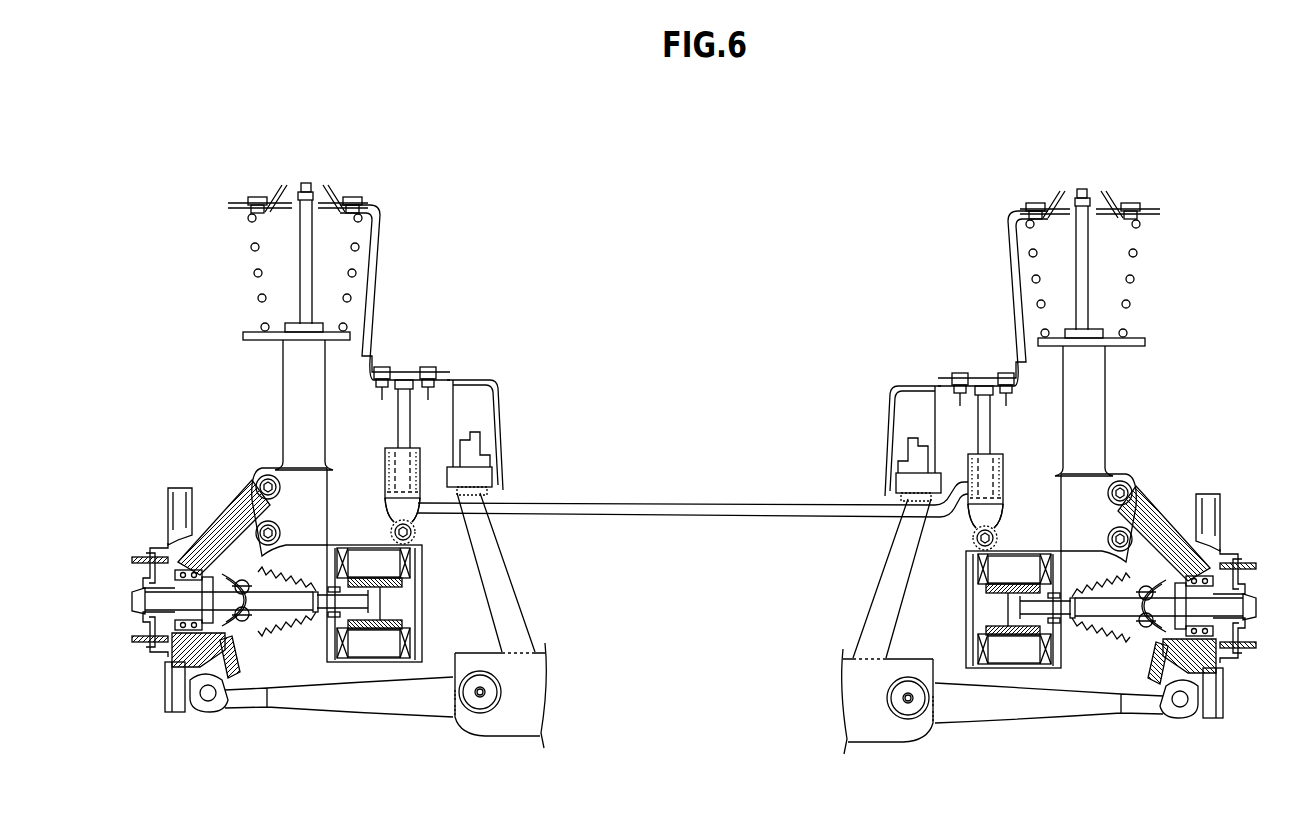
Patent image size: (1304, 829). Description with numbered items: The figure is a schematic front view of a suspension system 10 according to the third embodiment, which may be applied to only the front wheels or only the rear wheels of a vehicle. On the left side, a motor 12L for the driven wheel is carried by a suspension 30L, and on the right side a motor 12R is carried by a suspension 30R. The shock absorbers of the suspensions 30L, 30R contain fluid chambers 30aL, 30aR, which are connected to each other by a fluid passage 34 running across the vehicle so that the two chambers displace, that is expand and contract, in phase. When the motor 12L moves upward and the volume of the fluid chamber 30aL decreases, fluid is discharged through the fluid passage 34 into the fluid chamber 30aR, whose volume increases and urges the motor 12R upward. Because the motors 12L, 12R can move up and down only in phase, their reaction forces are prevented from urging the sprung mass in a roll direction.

The suspension system 10 is at (486, 225).
The motor 12L is at (388, 543).
The motor 12R is at (1008, 553).
The suspension 30L is at (388, 448).
The suspension 30R is at (1003, 452).
The fluid chamber 30aL is at (388, 502).
The fluid chamber 30aR is at (1000, 477).
The fluid passage 34 is at (792, 503).